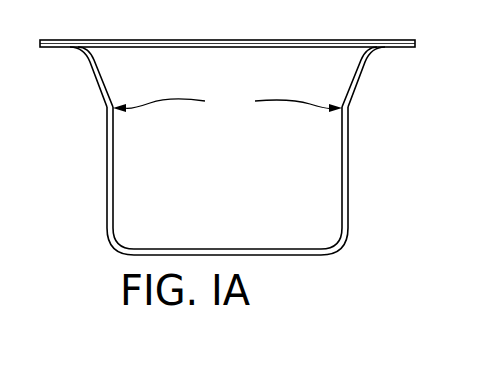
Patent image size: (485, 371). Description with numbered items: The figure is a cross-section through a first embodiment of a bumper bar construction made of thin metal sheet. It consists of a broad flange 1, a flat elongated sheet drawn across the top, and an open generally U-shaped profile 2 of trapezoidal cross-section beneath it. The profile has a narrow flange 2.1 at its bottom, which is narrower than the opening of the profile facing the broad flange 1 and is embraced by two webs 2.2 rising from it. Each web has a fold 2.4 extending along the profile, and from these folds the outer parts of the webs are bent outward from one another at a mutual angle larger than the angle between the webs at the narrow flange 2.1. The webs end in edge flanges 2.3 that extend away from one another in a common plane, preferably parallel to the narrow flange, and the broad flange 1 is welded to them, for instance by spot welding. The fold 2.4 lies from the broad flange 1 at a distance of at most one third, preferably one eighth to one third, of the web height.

The broad flange 1 is at (128, 39).
The U-shaped profile 2 is at (241, 151).
The narrow flange 2.1 is at (276, 248).
The webs 2.2 is at (107, 163).
The edge flanges 2.3 is at (64, 49).
The folds 2.4 is at (227, 103).